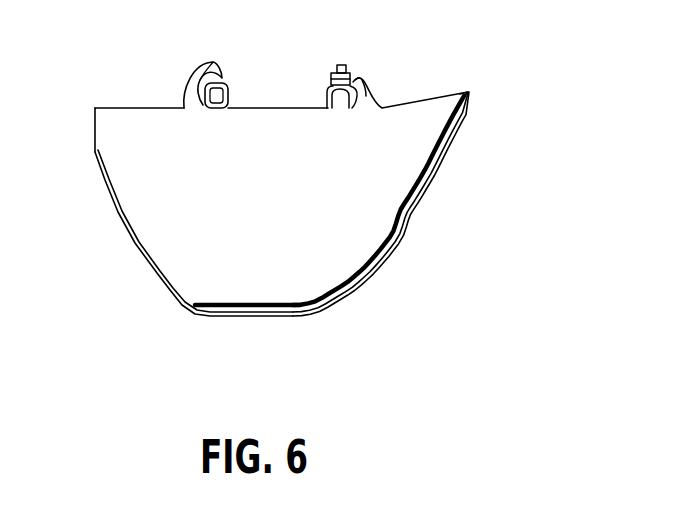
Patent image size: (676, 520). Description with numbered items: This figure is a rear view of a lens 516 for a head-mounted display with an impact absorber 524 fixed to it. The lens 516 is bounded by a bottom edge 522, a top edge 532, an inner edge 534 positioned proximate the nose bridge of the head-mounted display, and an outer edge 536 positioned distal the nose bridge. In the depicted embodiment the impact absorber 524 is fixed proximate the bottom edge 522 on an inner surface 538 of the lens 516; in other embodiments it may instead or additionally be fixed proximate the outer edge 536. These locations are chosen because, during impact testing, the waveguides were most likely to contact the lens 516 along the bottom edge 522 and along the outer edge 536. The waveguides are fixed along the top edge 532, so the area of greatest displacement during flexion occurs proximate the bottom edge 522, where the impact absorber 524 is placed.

The lens 516 is at (439, 50).
The bottom edge 522 is at (260, 318).
The impact absorber 524 is at (447, 133).
The top edge 532 is at (274, 108).
The inner edge 534 is at (120, 210).
The outer edge 536 is at (395, 235).
The inner surface 538 is at (425, 122).